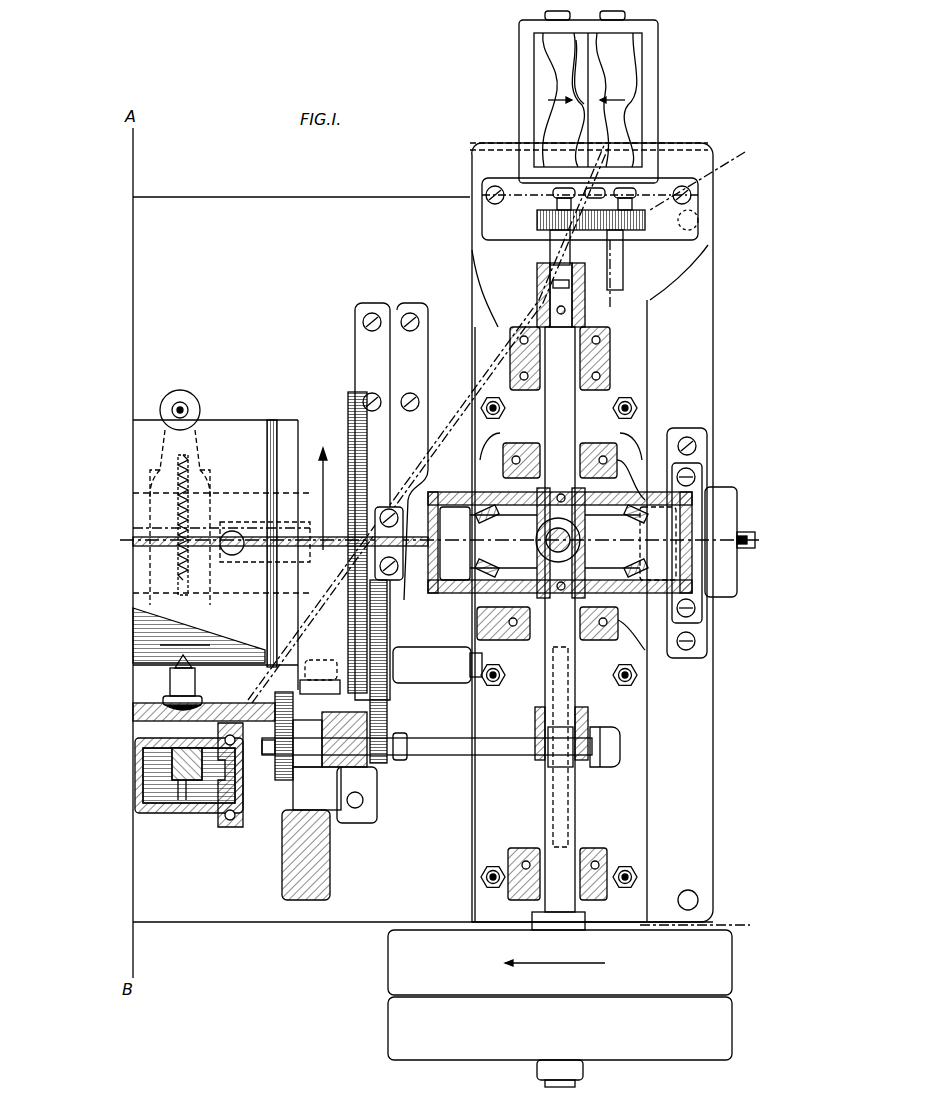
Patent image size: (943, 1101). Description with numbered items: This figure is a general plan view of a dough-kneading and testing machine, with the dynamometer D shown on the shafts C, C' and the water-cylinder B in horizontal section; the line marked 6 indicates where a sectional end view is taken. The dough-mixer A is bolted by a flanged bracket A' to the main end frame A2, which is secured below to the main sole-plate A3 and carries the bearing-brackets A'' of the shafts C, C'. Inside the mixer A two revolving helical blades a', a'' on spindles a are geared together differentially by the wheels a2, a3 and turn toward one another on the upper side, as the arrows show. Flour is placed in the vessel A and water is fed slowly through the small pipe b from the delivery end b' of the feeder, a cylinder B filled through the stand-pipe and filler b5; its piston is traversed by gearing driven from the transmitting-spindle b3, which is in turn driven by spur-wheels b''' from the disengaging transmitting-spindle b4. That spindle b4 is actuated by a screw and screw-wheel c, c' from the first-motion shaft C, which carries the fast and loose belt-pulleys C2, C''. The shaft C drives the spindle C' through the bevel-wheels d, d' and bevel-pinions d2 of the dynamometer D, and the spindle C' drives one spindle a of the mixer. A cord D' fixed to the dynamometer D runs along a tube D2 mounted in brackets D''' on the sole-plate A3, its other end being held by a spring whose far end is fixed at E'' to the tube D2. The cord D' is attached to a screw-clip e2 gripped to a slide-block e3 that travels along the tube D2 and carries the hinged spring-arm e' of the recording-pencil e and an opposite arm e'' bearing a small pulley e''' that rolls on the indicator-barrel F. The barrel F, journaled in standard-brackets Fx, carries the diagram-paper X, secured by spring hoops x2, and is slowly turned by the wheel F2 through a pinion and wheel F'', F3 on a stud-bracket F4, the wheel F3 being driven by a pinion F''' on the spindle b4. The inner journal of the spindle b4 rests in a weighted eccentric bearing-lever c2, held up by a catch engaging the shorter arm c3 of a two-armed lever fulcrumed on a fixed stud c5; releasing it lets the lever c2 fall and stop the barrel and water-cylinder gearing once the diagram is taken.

The dough-mixer A is at (589, 97).
The flanged bracket A' is at (588, 202).
The main end frame A2 is at (591, 532).
The main sole-plate A3 is at (551, 550).
The bearing-brackets A'' is at (561, 613).
The spindles a is at (583, 260).
The revolving helical blade a' is at (564, 100).
The revolving helical blade a'' is at (616, 100).
The wheel a2 is at (537, 219).
The wheel a3 is at (657, 225).
The small pipe b is at (428, 423).
The delivery end b' is at (241, 775).
The spur-wheels b''' is at (277, 753).
The transmitting-spindle b3 is at (225, 705).
The disengaging transmitting-spindle b4 is at (441, 746).
The stand-pipe and filler b5 is at (178, 802).
The water-cylinder B is at (137, 805).
The first-motion shaft C is at (538, 749).
The second spindle C' is at (558, 596).
The loose belt-pulley C'' is at (560, 1042).
The fast belt-pulley C2 is at (560, 962).
The screw c is at (550, 744).
The screw-wheel c' is at (548, 747).
The weighted eccentric bearing-lever c2 is at (300, 815).
The shorter arm c3 is at (320, 701).
The fixed stud c5 is at (321, 651).
The dynamometer D is at (560, 542).
The cord D' is at (721, 542).
The tube D2 is at (708, 590).
The brackets D''' is at (706, 543).
The bevel-wheel d is at (527, 543).
The bevel-wheel d' is at (561, 520).
The bevel-pinions d2 is at (585, 554).
The spring fixing E'' is at (755, 530).
The recording-pencil e is at (190, 682).
The spring-arm e' is at (181, 643).
The arm e'' is at (184, 517).
The small pulley e''' is at (268, 606).
The screw-clip e2 is at (233, 531).
The slide-block e3 is at (198, 525).
The indicator-barrel F is at (363, 501).
The pinion F'' is at (324, 694).
The pinion F''' is at (406, 758).
The wheel F2 is at (340, 624).
The wheel F3 is at (387, 622).
The stud-bracket F4 is at (437, 664).
The standard-brackets Fx is at (404, 460).
The diagram-paper X is at (280, 543).
The spring hoops x2 is at (289, 488).
The wedge x'' is at (199, 635).
The section line 6 is at (678, 537).